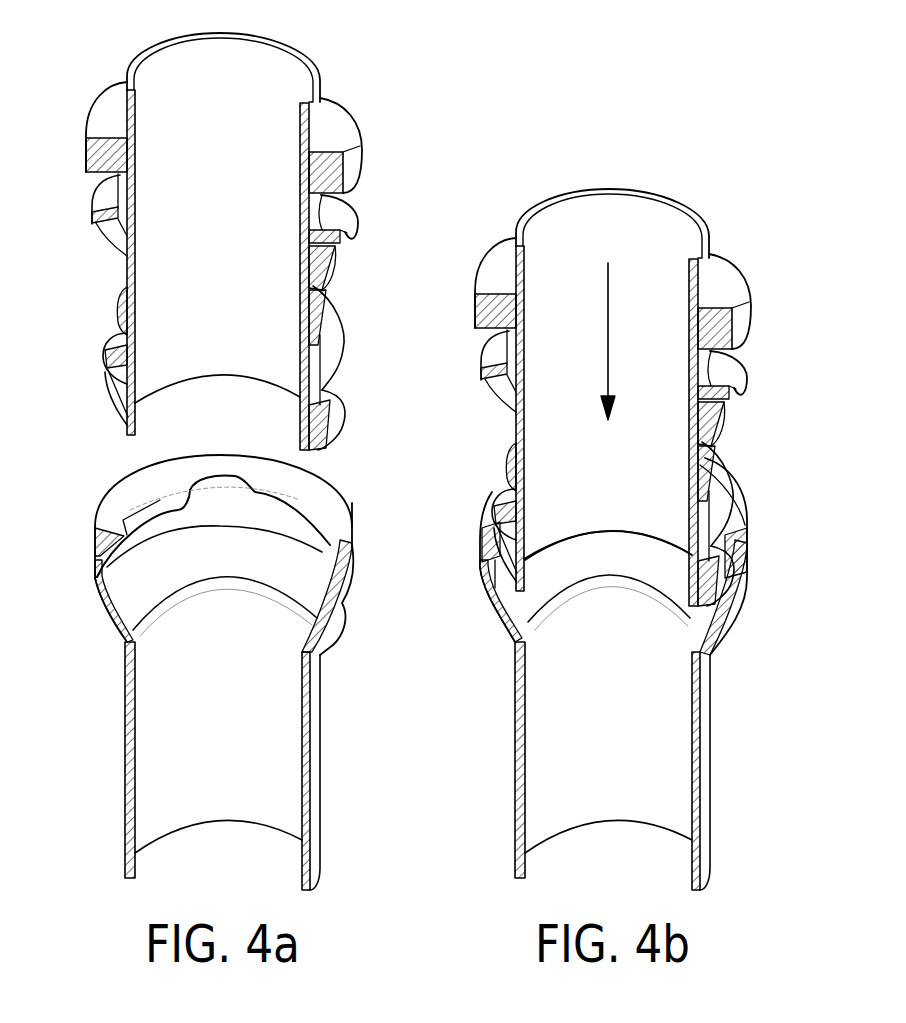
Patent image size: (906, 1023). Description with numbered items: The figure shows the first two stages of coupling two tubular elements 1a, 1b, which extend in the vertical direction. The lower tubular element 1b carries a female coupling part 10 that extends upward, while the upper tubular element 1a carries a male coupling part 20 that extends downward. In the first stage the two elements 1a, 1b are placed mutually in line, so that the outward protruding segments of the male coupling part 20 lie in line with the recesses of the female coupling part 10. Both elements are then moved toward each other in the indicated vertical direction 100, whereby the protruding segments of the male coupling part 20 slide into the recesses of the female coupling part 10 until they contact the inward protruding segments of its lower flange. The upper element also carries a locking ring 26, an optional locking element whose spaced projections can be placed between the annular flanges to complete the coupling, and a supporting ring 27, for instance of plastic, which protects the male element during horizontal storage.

In FIG. 4a, the tubular element 1a is at (103, 268).
In FIG. 4b, the tubular element 1a is at (486, 421).
In FIG. 4a, the tubular element 1b is at (105, 708).
In FIG. 4b, the tubular element 1b is at (486, 708).
In FIG. 4a, the female coupling part 10 is at (72, 544).
In FIG. 4a, the male coupling part 20 is at (83, 367).
In FIG. 4b, the male coupling part 20 is at (613, 504).
In FIG. 4a, the locking ring 26 is at (353, 229).
In FIG. 4b, the locking ring 26 is at (748, 384).
In FIG. 4a, the supporting ring 27 is at (353, 157).
In FIG. 4b, the supporting ring 27 is at (748, 311).
In FIG. 4b, the vertical direction 100 is at (607, 338).